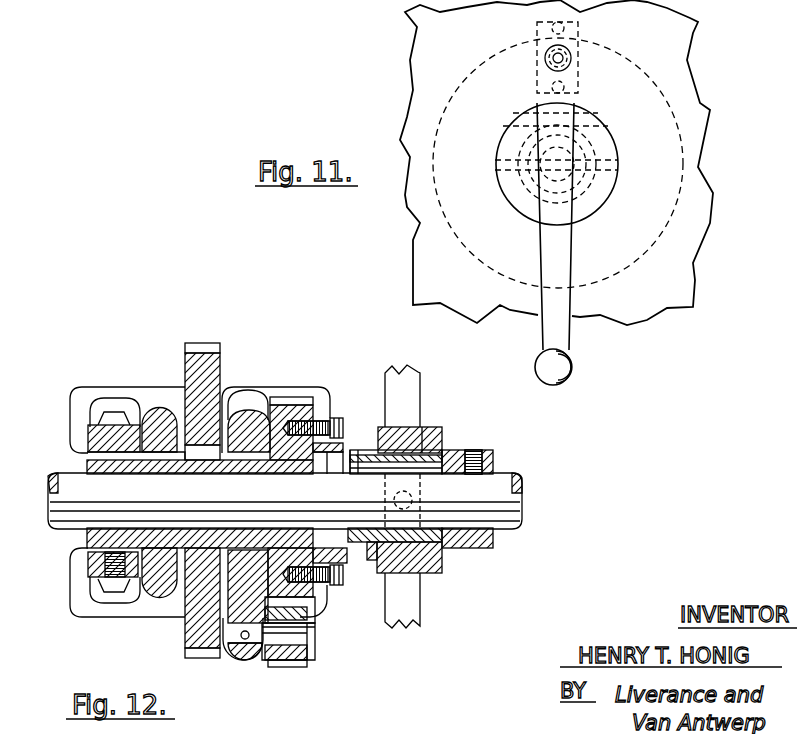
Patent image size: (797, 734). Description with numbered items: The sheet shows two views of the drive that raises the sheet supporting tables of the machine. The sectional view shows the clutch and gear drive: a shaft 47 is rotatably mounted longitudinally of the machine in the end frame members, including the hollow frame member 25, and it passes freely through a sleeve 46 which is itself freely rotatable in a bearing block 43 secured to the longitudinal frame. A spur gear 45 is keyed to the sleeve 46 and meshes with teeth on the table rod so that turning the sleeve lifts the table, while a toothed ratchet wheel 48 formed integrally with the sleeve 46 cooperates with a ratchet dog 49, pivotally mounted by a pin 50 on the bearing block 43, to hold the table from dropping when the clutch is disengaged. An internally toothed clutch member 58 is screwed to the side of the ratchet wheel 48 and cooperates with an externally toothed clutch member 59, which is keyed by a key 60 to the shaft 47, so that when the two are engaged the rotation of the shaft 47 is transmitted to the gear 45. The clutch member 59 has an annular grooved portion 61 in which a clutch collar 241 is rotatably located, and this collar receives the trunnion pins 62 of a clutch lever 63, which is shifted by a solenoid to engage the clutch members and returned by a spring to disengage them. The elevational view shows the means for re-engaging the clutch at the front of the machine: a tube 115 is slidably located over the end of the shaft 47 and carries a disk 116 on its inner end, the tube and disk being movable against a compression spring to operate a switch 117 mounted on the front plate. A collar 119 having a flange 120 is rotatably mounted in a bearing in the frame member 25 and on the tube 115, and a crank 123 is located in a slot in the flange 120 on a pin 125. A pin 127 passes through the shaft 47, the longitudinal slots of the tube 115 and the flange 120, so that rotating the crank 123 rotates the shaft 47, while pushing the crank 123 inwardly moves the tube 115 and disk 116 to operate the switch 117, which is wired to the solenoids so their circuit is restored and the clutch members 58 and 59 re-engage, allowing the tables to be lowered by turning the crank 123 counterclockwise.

In FIG. 11, the hollow frame member 25 is at (430, 78).
In FIG. 11, the disk 116 is at (500, 57).
In FIG. 11, the switch 117 is at (582, 40).
In FIG. 11, the pin 125 is at (523, 116).
In FIG. 11, the pin 127 is at (497, 163).
In FIG. 11, the tube 115 is at (580, 162).
In FIG. 11, the collar 119 is at (592, 178).
In FIG. 11, the flange 120 is at (597, 193).
In FIG. 11, the crank 123 is at (558, 327).
In FIG. 12, the bearing block 43 is at (163, 425).
In FIG. 12, the spur gear 45 is at (203, 375).
In FIG. 12, the sleeve 46 is at (107, 468).
In FIG. 12, the shaft 47 is at (502, 493).
In FIG. 12, the toothed ratchet wheel 48 is at (286, 412).
In FIG. 12, the ratchet dog 49 is at (303, 652).
In FIG. 12, the pin 50 is at (297, 630).
In FIG. 12, the internally toothed clutch member 58 is at (330, 415).
In FIG. 12, the externally toothed clutch member 59 is at (360, 458).
In FIG. 12, the key 60 is at (382, 478).
In FIG. 12, the annular grooved portion 61 is at (440, 440).
In FIG. 12, the trunnion pins 62 is at (410, 497).
In FIG. 12, the clutch lever 63 is at (402, 397).
In FIG. 12, the clutch collar 241 is at (408, 560).